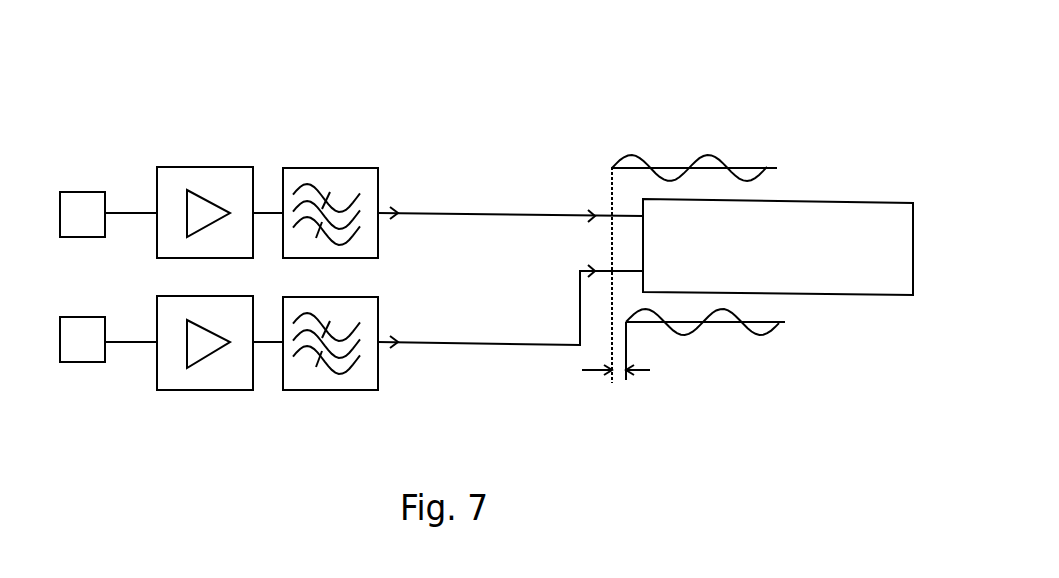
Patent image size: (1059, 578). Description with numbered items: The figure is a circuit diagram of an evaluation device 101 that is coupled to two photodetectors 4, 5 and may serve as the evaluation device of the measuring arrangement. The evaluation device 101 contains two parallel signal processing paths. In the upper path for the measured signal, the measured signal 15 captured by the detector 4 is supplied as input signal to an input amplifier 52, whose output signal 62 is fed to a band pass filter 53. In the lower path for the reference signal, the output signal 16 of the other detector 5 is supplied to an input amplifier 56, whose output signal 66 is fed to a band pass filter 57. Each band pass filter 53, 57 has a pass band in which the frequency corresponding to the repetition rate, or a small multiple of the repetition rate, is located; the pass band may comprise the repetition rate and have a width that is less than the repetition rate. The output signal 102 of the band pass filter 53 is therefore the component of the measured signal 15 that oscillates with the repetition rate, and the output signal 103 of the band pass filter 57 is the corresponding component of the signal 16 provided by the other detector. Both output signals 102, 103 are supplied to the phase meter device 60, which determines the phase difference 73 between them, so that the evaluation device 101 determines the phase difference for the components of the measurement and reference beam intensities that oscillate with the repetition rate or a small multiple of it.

The photodetector 4 is at (85, 192).
The photodetector 5 is at (76, 362).
The measured signal 15 is at (126, 213).
The output signal 16 is at (126, 342).
The input amplifier 52 is at (197, 167).
The input amplifier 56 is at (188, 390).
The output signal 62 is at (265, 213).
The output signal 66 is at (265, 342).
The band pass filter 53 is at (333, 168).
The band pass filter 57 is at (314, 390).
The phase meter device 60 is at (902, 295).
The phase difference 73 is at (639, 370).
The evaluation device 101 is at (614, 92).
The output signal 102 is at (529, 215).
The output signal 103 is at (532, 345).